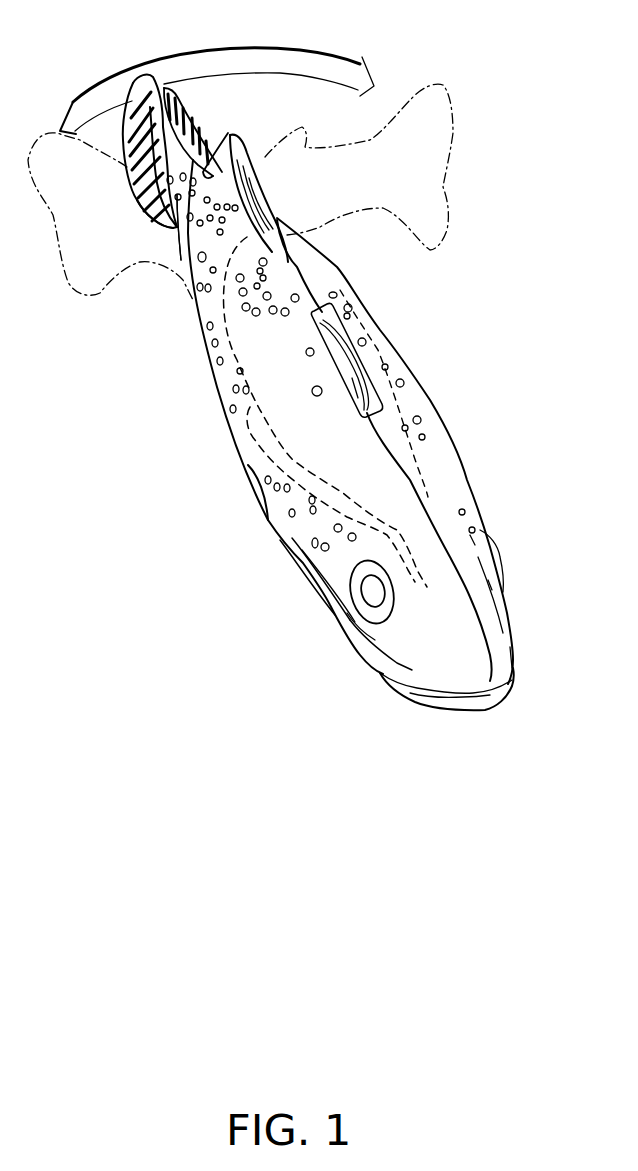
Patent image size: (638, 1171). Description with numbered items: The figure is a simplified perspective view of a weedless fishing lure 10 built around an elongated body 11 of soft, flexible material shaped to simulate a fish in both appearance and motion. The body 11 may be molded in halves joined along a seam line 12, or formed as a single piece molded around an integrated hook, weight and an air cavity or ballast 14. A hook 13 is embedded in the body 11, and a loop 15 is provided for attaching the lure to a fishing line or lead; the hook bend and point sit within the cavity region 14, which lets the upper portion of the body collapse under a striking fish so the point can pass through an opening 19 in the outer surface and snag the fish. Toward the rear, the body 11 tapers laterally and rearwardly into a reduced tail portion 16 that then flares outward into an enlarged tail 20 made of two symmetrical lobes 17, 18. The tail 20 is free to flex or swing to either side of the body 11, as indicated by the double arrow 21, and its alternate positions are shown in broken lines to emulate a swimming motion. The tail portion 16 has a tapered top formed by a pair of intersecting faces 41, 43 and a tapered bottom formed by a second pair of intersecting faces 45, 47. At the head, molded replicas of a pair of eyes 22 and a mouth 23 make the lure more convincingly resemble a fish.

The fishing lure 10 is at (196, 582).
The elongated body 11 is at (397, 360).
The seam line 12 is at (393, 413).
The hook 13 is at (352, 338).
The cavity region 14 is at (243, 328).
The loop 15 is at (450, 510).
The reduced tail portion 16 is at (172, 236).
The symmetrical lobe 17 is at (80, 108).
The symmetrical lobe 18 is at (181, 92).
The opening 19 is at (337, 348).
The enlarged tail 20 is at (143, 99).
The double arrow 21 is at (288, 55).
The eyes 22 is at (370, 590).
The mouth 23 is at (413, 698).
The intersecting face 41 is at (123, 172).
The intersecting face 43 is at (182, 92).
The intersecting face 45 is at (147, 218).
The intersecting face 47 is at (228, 133).